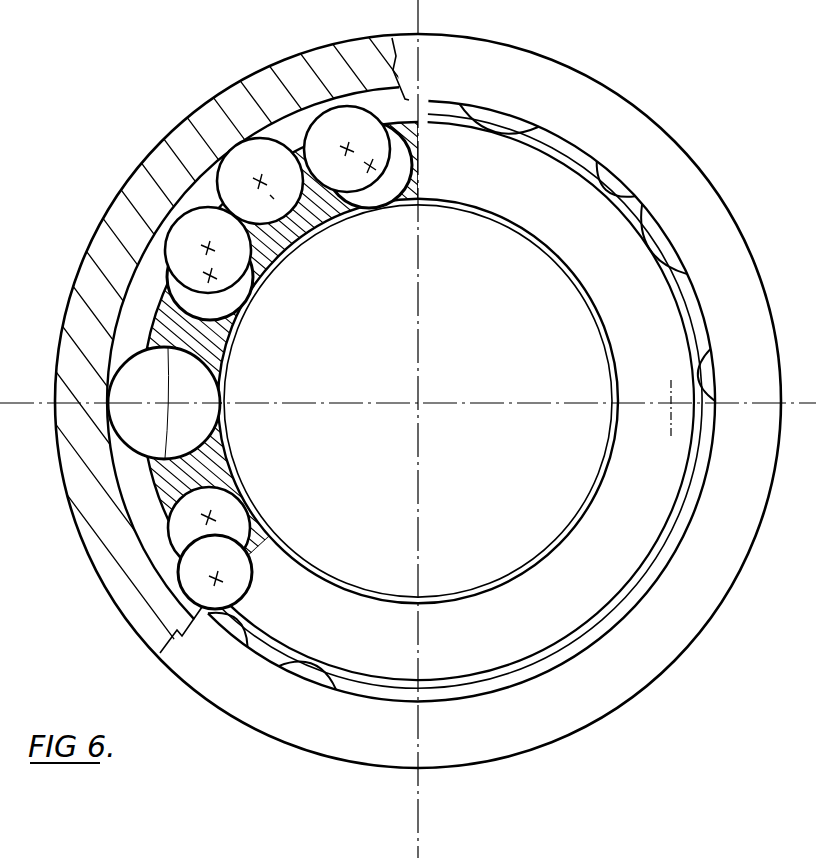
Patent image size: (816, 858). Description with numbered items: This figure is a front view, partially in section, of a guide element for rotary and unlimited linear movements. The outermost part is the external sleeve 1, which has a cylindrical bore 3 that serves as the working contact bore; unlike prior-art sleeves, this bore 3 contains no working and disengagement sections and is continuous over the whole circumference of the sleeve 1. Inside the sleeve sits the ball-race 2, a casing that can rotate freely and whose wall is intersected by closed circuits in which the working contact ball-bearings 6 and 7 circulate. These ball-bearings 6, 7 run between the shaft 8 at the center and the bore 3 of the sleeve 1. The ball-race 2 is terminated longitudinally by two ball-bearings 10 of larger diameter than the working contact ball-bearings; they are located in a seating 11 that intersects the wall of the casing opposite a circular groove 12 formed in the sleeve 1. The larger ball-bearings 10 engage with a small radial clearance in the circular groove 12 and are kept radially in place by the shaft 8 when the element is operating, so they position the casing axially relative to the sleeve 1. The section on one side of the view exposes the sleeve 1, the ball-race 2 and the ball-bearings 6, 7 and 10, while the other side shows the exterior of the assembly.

The external sleeve 1 is at (632, 151).
The ball-race 2 is at (571, 217).
The cylindrical bore 3 is at (638, 581).
The ball-bearings 6 is at (218, 562).
The ball-bearings 7 is at (235, 175).
The shaft 8 is at (483, 504).
The ball-bearings of larger diameter 10 is at (150, 375).
The seating 11 is at (220, 375).
The circular groove 12 is at (123, 494).